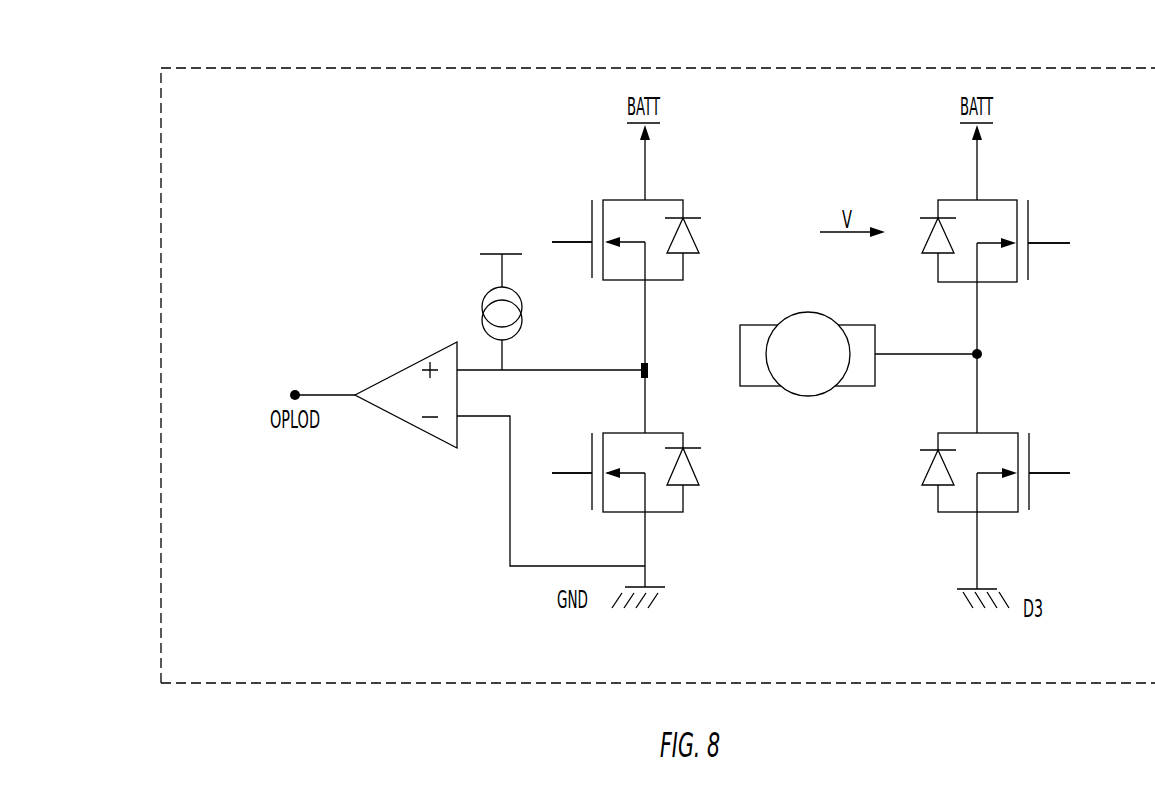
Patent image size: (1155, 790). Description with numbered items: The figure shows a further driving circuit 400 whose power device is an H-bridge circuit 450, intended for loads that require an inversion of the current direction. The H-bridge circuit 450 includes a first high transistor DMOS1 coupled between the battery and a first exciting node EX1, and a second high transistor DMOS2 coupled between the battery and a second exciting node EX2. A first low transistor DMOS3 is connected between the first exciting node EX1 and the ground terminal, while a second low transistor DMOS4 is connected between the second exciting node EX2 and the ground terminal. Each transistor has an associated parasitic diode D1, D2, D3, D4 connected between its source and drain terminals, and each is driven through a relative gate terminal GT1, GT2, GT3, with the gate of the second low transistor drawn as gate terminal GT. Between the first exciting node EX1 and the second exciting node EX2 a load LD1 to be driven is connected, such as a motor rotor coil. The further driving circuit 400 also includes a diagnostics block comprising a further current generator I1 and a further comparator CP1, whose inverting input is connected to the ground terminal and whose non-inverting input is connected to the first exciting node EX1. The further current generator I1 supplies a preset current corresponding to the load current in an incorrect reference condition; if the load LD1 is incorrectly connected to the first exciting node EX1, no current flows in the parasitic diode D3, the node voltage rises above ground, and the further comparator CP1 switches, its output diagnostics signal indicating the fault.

The further driving circuit 400 is at (440, 66).
The H-bridge circuit 450 is at (823, 649).
The first high transistor DMOS1 is at (626, 198).
The second high transistor DMOS2 is at (997, 200).
The first low transistor DMOS3 is at (625, 512).
The second low transistor DMOS4 is at (997, 433).
The gate terminal GT1 is at (572, 226).
The gate terminal GT2 is at (1049, 227).
The gate terminal GT3 is at (572, 457).
The gate terminal GT is at (1049, 459).
The parasitic diode D1 is at (698, 247).
The parasitic diode D2 is at (925, 243).
The parasitic diode D3 is at (693, 467).
The parasitic diode D4 is at (925, 468).
The first exciting node EX1 is at (623, 359).
The second exciting node EX2 is at (993, 355).
The load LD1 is at (762, 325).
The further comparator CP1 is at (425, 432).
The further current generator I1 is at (497, 264).